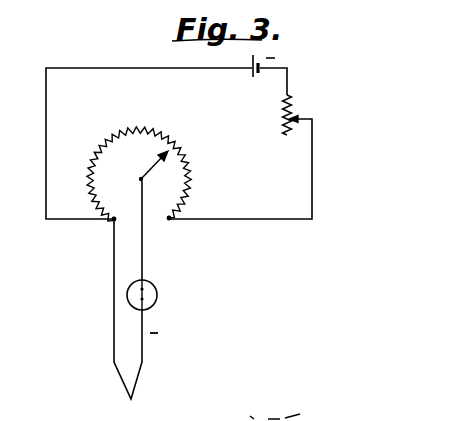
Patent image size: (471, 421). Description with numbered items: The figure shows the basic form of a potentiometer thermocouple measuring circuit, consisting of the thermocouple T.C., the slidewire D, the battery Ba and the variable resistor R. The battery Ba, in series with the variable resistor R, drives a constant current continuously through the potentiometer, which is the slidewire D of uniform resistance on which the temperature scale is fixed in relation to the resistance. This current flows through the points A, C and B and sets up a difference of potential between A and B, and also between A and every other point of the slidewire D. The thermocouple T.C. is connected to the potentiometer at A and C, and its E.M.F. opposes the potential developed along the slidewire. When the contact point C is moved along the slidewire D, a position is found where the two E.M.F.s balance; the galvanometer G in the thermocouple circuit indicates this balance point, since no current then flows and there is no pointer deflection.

The battery Ba is at (257, 59).
The variable resistor R is at (300, 115).
The slidewire D is at (125, 131).
The slider contact point C is at (165, 155).
The slidewire end point A is at (102, 230).
The slidewire end point B is at (168, 230).
The galvanometer G is at (154, 295).
The thermocouple T.C. is at (126, 301).